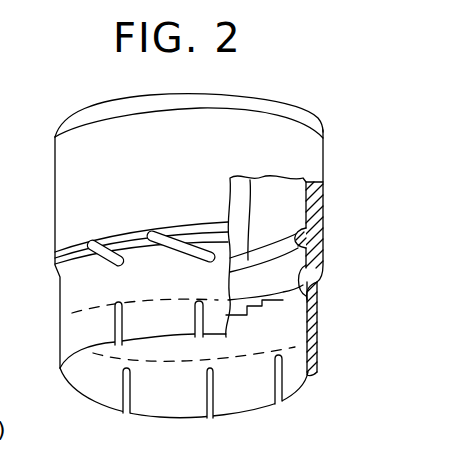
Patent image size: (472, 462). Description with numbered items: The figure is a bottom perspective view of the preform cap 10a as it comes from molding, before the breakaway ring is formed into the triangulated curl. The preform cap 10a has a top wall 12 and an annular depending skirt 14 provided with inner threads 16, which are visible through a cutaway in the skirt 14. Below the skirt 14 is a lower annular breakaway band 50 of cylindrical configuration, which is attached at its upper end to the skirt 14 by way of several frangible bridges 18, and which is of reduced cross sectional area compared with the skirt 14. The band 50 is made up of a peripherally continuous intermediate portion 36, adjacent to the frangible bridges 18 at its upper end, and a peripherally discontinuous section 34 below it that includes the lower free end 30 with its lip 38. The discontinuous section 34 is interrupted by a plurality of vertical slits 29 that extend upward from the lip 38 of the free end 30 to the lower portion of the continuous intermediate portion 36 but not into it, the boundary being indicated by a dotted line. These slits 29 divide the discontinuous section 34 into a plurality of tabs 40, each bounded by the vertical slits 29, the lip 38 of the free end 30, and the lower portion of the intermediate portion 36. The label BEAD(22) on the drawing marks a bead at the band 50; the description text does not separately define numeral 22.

The preform cap 10a is at (321, 116).
The top wall 12 is at (257, 102).
The annular depending skirt 14 is at (325, 197).
The inner threads 16 is at (264, 257).
The frangible bridges 18 is at (57, 272).
The lower annular breakaway band 50 is at (323, 283).
The peripherally continuous intermediate portion 36 is at (320, 307).
The bead 22 is at (313, 330).
The peripherally discontinuous section 34 is at (313, 372).
The vertical slits 29 is at (284, 387).
The lower free end 30 is at (148, 405).
The lip 38 is at (223, 420).
The tabs 40 is at (180, 397).